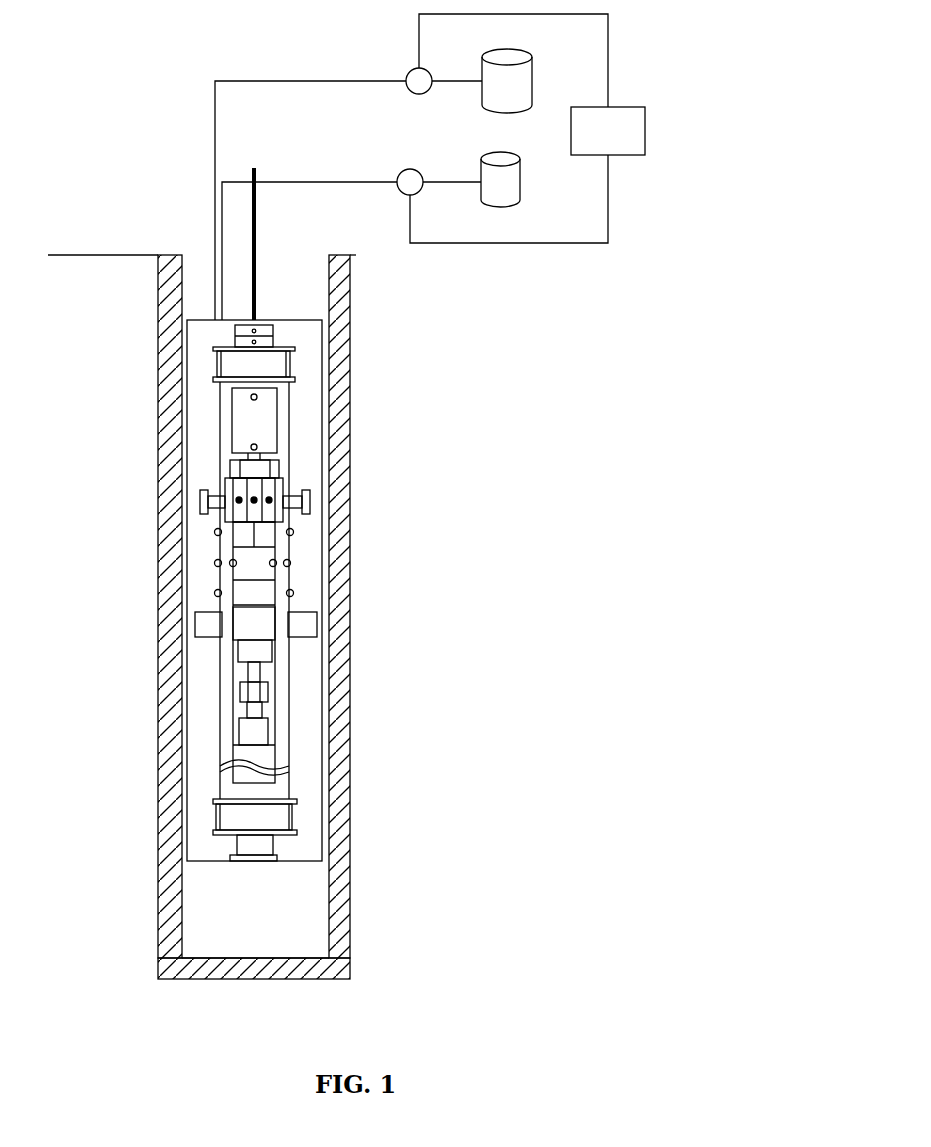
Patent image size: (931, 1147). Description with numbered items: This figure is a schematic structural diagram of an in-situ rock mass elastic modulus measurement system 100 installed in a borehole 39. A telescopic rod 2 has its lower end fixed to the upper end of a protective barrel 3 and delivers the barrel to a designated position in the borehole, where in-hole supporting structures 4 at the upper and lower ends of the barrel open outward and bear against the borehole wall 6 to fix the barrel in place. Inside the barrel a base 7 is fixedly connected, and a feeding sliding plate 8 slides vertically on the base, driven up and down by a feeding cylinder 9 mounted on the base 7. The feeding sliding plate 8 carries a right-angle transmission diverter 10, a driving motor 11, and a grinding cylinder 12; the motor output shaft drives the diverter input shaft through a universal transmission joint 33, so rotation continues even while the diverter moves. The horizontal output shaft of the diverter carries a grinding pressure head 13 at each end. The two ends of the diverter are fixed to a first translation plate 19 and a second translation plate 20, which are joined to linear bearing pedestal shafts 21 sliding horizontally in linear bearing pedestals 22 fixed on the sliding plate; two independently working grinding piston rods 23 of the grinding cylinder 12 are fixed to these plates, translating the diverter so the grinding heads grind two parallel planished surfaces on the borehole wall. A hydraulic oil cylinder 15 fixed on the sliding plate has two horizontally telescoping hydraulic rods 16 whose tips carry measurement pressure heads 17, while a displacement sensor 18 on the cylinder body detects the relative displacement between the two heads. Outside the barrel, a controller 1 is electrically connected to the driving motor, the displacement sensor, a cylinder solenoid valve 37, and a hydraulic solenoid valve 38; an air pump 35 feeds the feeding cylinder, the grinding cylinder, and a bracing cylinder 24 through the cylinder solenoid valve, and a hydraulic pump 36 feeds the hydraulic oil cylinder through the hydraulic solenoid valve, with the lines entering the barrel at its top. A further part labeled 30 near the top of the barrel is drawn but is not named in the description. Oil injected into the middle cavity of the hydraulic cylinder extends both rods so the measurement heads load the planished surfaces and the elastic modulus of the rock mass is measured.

The in-situ rock mass elastic modulus measurement system 100 is at (128, 102).
The controller 1 is at (617, 128).
The telescopic rod 2 is at (252, 247).
The protective barrel 3 is at (240, 325).
The in-hole supporting structure 4 is at (213, 358).
The borehole wall 6 is at (325, 285).
The base 7 is at (233, 410).
The feeding sliding plate 8 is at (245, 675).
The feeding cylinder 9 is at (242, 435).
The right-angle transmission diverter 10 is at (250, 622).
The driving motor 11 is at (233, 742).
The grinding cylinder 12 is at (240, 597).
The grinding pressure head 13 is at (210, 628).
The hydraulic oil cylinder 15 is at (283, 515).
The hydraulic rod 16 is at (203, 497).
The measurement pressure head 17 is at (200, 503).
The displacement sensor 18 is at (233, 509).
The first translation plate 19 is at (232, 557).
The second translation plate 20 is at (290, 580).
The linear bearing pedestal shaft 21 is at (292, 533).
The linear bearing pedestal 22 is at (226, 533).
The grinding piston rod 23 is at (218, 568).
The bracing cylinder 24 is at (262, 338).
The top neck 30 is at (272, 323).
The universal transmission joint 33 is at (268, 692).
The air pump 35 is at (512, 78).
The hydraulic pump 36 is at (510, 183).
The cylinder solenoid valve 37 is at (419, 81).
The hydraulic solenoid valve 38 is at (410, 182).
The borehole 39 is at (297, 895).